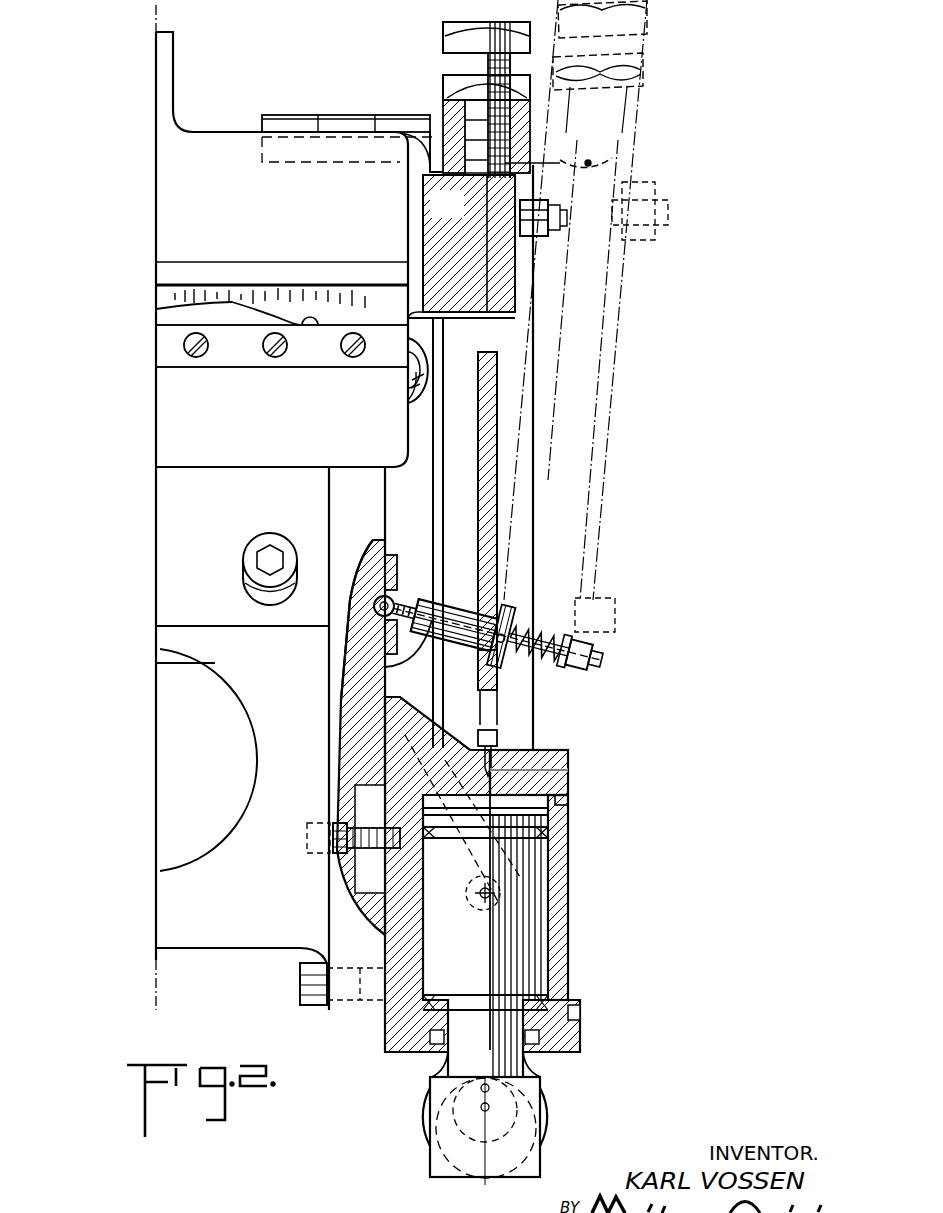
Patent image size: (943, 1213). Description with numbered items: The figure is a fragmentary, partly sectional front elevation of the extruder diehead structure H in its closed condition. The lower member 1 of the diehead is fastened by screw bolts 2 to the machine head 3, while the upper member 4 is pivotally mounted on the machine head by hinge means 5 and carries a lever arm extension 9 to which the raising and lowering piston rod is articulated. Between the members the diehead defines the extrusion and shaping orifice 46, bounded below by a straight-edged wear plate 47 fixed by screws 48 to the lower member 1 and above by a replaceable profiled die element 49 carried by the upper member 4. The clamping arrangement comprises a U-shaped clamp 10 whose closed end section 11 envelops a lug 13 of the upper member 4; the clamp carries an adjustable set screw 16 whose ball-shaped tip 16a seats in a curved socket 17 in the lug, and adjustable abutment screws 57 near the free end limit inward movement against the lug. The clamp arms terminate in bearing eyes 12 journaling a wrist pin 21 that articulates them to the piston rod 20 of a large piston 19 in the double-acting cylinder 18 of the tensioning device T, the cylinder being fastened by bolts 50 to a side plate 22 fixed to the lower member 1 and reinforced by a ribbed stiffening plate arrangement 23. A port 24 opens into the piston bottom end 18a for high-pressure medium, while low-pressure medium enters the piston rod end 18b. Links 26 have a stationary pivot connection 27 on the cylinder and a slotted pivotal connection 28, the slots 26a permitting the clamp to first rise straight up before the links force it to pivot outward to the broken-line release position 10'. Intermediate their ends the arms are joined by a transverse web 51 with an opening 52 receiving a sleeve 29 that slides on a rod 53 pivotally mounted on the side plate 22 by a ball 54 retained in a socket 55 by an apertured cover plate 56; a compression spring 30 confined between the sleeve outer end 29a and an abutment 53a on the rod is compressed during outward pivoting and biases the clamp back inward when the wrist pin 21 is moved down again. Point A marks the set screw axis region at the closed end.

The lower member 1 is at (172, 429).
The screw bolts 2 is at (408, 397).
The machine head 3 is at (428, 444).
The upper member 4 is at (183, 213).
The hinge means 5 is at (330, 152).
The lever arm extension 9 is at (176, 62).
The clamp 10 is at (510, 457).
The clamp release position 10' is at (613, 300).
The closed end section 11 is at (443, 107).
The bearing eyes 12 is at (548, 1119).
The lug 13 is at (500, 283).
The set screw 16 is at (460, 57).
The set screw tip 16a is at (600, 161).
The socket 17 is at (469, 243).
The fluid pressure cylinder 18 is at (560, 894).
The piston bottom end 18a is at (546, 819).
The piston rod end 18b is at (546, 1001).
The piston 19 is at (545, 871).
The piston rod 20 is at (458, 1060).
The wrist pin 21 is at (432, 1148).
The side plate 22 is at (357, 692).
The stiffening plate arrangement 23 is at (220, 955).
The port 24 is at (548, 795).
The links 26 is at (440, 879).
The slots 26a is at (465, 896).
The stationary pivot connection 27 is at (398, 741).
The pivotal connection 28 is at (471, 911).
The sleeve 29 is at (462, 606).
The sleeve outer end 29a is at (505, 660).
The compression spring 30 is at (545, 660).
The extrusion and shaping orifice 46 is at (162, 321).
The wear plate 47 is at (162, 361).
The screws 48 is at (279, 358).
The profiled die element 49 is at (162, 302).
The bolts 50 is at (360, 826).
The transverse web 51 is at (478, 467).
The opening 52 is at (482, 660).
The rod 53 is at (416, 606).
The abutment 53a is at (578, 640).
The ball 54 is at (380, 598).
The socket 55 is at (372, 612).
The apertured cover plate 56 is at (392, 556).
The abutment screws 57 is at (535, 245).
The axis A is at (530, 166).
The diehead structure H is at (140, 276).
The tensioning device T is at (384, 1023).